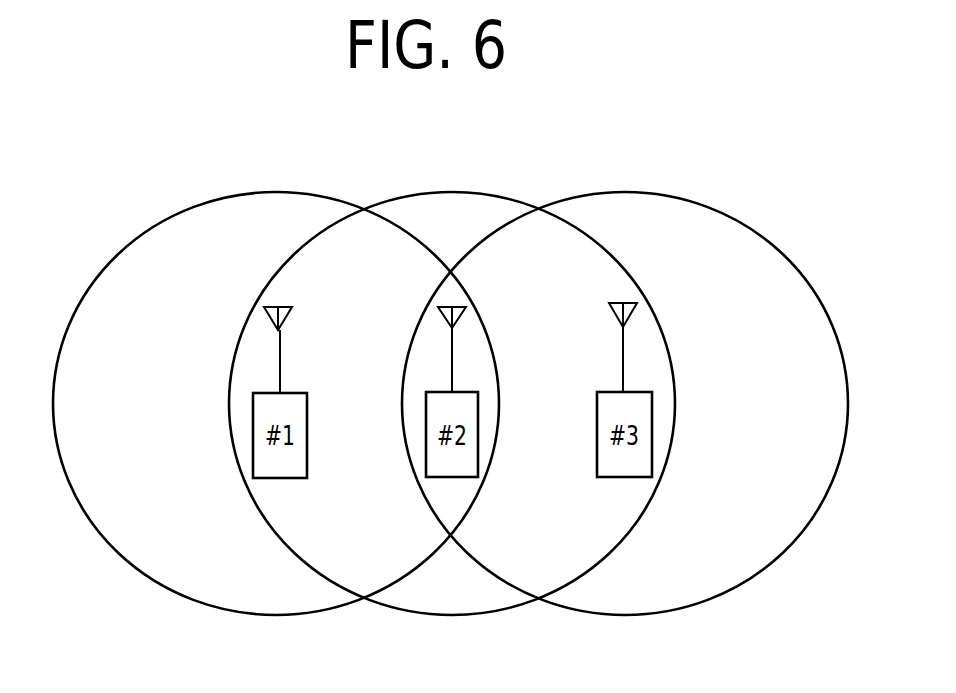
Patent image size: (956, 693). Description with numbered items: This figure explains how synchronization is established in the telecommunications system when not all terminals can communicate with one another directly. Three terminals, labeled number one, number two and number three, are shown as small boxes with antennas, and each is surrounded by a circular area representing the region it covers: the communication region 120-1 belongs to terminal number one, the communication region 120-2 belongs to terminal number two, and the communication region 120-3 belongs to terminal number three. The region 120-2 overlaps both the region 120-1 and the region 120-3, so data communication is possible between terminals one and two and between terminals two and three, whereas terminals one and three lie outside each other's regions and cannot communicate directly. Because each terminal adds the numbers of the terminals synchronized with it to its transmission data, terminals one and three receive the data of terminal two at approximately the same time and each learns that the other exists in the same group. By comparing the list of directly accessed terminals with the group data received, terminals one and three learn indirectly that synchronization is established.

The communication region of terminal #1 120-1 is at (180, 213).
The communication region of terminal #2 120-2 is at (470, 192).
The communication region of terminal #3 120-3 is at (715, 207).